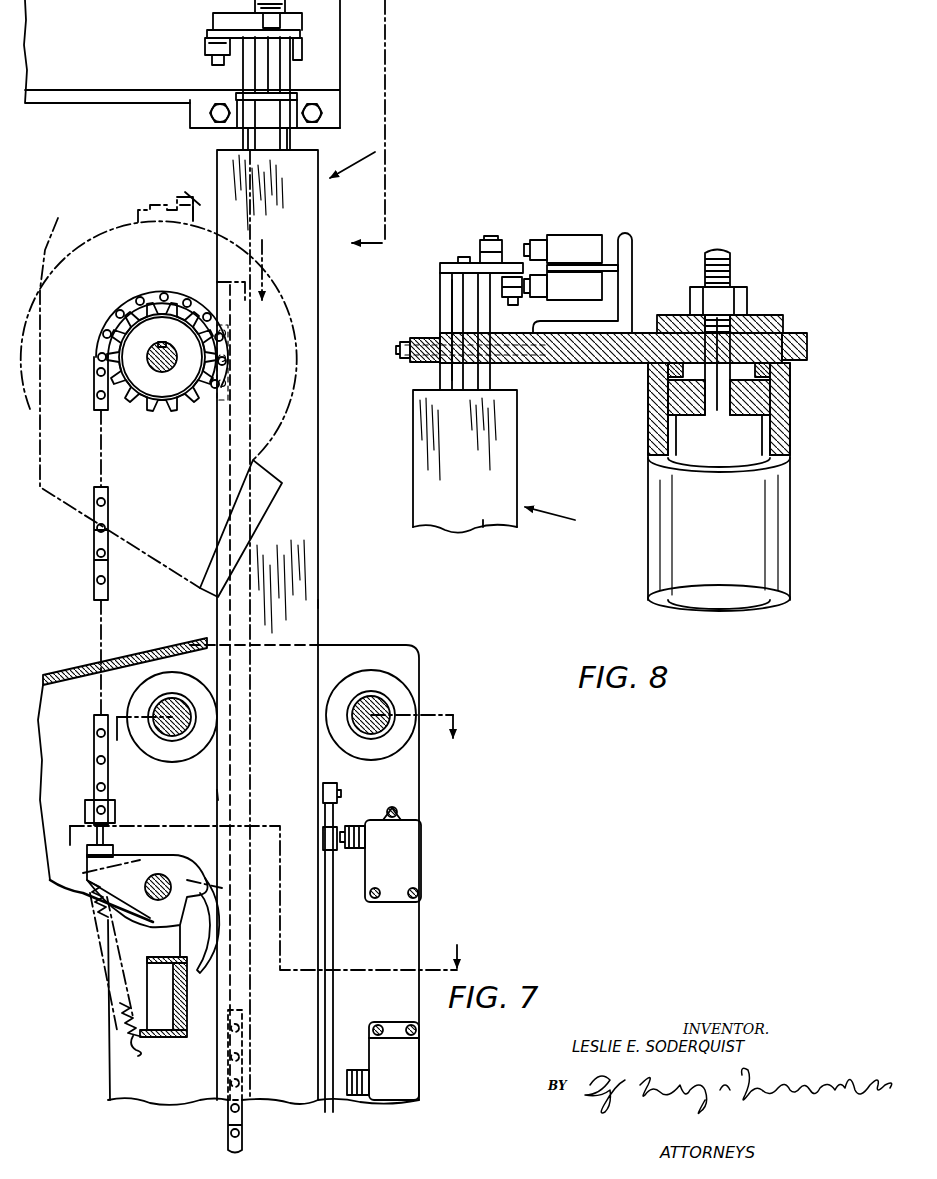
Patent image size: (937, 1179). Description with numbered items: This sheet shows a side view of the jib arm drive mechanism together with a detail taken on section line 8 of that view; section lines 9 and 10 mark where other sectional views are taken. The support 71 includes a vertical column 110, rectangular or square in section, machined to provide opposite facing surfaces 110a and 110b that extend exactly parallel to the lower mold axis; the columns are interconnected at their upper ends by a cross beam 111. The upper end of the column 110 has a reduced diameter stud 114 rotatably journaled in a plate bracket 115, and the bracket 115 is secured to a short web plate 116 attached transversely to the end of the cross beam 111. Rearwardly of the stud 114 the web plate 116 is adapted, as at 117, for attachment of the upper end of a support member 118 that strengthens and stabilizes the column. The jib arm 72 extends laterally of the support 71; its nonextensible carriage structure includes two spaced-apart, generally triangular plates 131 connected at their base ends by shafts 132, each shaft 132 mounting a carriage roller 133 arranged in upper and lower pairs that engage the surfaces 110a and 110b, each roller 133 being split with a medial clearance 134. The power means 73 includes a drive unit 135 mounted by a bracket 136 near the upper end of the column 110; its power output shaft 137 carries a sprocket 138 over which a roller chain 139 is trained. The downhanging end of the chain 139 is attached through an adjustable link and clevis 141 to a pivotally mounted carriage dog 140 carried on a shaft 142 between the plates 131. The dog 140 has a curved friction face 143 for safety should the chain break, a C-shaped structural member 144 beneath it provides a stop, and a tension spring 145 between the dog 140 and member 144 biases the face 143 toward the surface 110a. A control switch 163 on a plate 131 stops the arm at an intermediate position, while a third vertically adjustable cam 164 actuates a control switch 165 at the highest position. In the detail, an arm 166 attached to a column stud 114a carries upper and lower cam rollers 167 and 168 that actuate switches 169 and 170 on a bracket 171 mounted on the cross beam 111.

In FIG. 7, the support 71 is at (362, 160).
In FIG. 8, the support 71 is at (563, 525).
In FIG. 7, the jib arm 72 is at (385, 642).
In FIG. 7, the power means 73 is at (276, 262).
In FIG. 7, the vertical column 110 is at (305, 563).
In FIG. 8, the vertical column 110 is at (505, 470).
In FIG. 7, the facing surface 110a is at (221, 783).
In FIG. 7, the facing surface 110b is at (320, 613).
In FIG. 8, the facing surface 110b is at (483, 530).
In FIG. 7, the cross beam 111 is at (95, 88).
In FIG. 8, the cross beam 111 is at (628, 240).
In FIG. 7, the stud 114 is at (268, 70).
In FIG. 8, the stud 114 is at (440, 318).
In FIG. 8, the column stud 114a is at (452, 290).
In FIG. 7, the plate bracket 115 is at (333, 113).
In FIG. 8, the plate bracket 115 is at (425, 362).
In FIG. 8, the web plate 116 is at (585, 365).
In FIG. 8, the attachment 117 is at (705, 375).
In FIG. 8, the support member 118 is at (665, 570).
In FIG. 7, the plate 131 is at (122, 680).
In FIG. 7, the shaft 132 is at (165, 730).
In FIG. 7, the carriage roller 133 is at (178, 752).
In FIG. 7, the medial clearance 134 is at (190, 703).
In FIG. 7, the drive unit 135 is at (68, 262).
In FIG. 7, the bracket 136 is at (185, 185).
In FIG. 7, the power output shaft 137 is at (150, 366).
In FIG. 7, the sprocket 138 is at (162, 400).
In FIG. 7, the roller chain 139 is at (108, 545).
In FIG. 7, the carriage dog 140 is at (153, 920).
In FIG. 7, the adjustable link and clevis 141 is at (112, 845).
In FIG. 7, the shaft 142 is at (183, 845).
In FIG. 7, the curved friction face 143 is at (215, 940).
In FIG. 7, the C-shaped structural member 144 is at (165, 1037).
In FIG. 7, the tension spring 145 is at (133, 1033).
In FIG. 7, the control switch 163 is at (415, 1070).
In FIG. 7, the third vertically adjustable cam 164 is at (332, 832).
In FIG. 7, the control switch 165 is at (410, 855).
In FIG. 7, the arm 166 is at (213, 34).
In FIG. 8, the arm 166 is at (447, 265).
In FIG. 7, the upper cam roller 167 is at (275, 4).
In FIG. 8, the upper cam roller 167 is at (490, 250).
In FIG. 7, the lower cam roller 168 is at (215, 46).
In FIG. 8, the lower cam roller 168 is at (512, 300).
In FIG. 8, the switch 169 is at (580, 245).
In FIG. 8, the switch 170 is at (590, 285).
In FIG. 8, the bracket 171 is at (600, 268).
In FIG. 7, the section line 8 is at (377, 128).
In FIG. 7, the section line 9 is at (292, 740).
In FIG. 7, the section line 10 is at (269, 898).